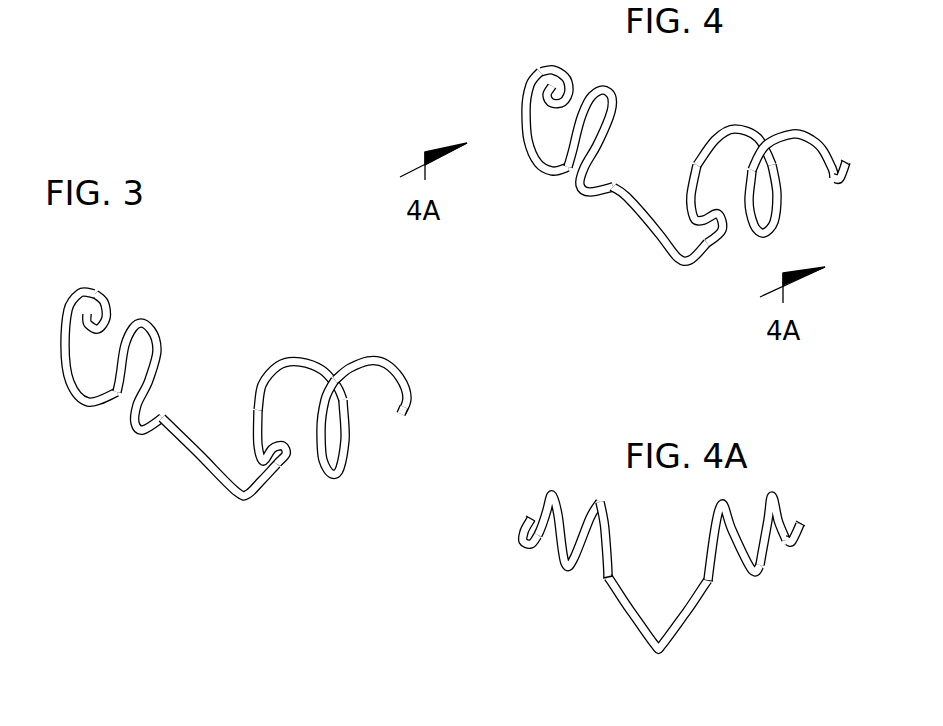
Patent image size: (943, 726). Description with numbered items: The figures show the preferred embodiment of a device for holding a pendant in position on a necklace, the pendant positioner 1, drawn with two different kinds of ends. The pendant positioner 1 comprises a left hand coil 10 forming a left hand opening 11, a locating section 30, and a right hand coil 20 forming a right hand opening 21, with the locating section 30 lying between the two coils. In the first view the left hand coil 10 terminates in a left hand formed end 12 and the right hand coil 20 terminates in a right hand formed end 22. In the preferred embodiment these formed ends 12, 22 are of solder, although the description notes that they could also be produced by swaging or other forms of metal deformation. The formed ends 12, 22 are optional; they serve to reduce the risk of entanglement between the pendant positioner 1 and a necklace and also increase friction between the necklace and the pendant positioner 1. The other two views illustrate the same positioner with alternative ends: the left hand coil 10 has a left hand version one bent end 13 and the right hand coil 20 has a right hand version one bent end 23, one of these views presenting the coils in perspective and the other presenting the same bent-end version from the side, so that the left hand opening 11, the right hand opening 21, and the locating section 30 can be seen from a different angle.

In FIG. 3, the pendant positioner 1 is at (269, 433).
In FIG. 4, the pendant positioner 1 is at (652, 173).
In FIG. 4A, the pendant positioner 1 is at (642, 545).
In FIG. 3, the left hand coil 10 is at (390, 383).
In FIG. 4, the left hand coil 10 is at (791, 168).
In FIG. 4A, the left hand coil 10 is at (796, 509).
In FIG. 3, the left hand opening 11 is at (370, 432).
In FIG. 4, the left hand opening 11 is at (797, 197).
In FIG. 4A, the left hand opening 11 is at (778, 548).
In FIG. 3, the left hand formed end 12 is at (410, 410).
In FIG. 4, the left hand version one bent end 13 is at (839, 187).
In FIG. 4A, the left hand version one bent end 13 is at (804, 542).
In FIG. 3, the right hand coil 20 is at (114, 360).
In FIG. 4, the right hand coil 20 is at (516, 135).
In FIG. 4A, the right hand coil 20 is at (503, 518).
In FIG. 3, the right hand opening 21 is at (103, 357).
In FIG. 4, the right hand opening 21 is at (555, 128).
In FIG. 4A, the right hand opening 21 is at (545, 547).
In FIG. 3, the right hand formed end 22 is at (104, 328).
In FIG. 4, the right hand version one bent end 23 is at (553, 92).
In FIG. 4A, the right hand version one bent end 23 is at (518, 537).
In FIG. 3, the locating section 30 is at (259, 490).
In FIG. 4, the locating section 30 is at (703, 248).
In FIG. 4A, the locating section 30 is at (617, 607).